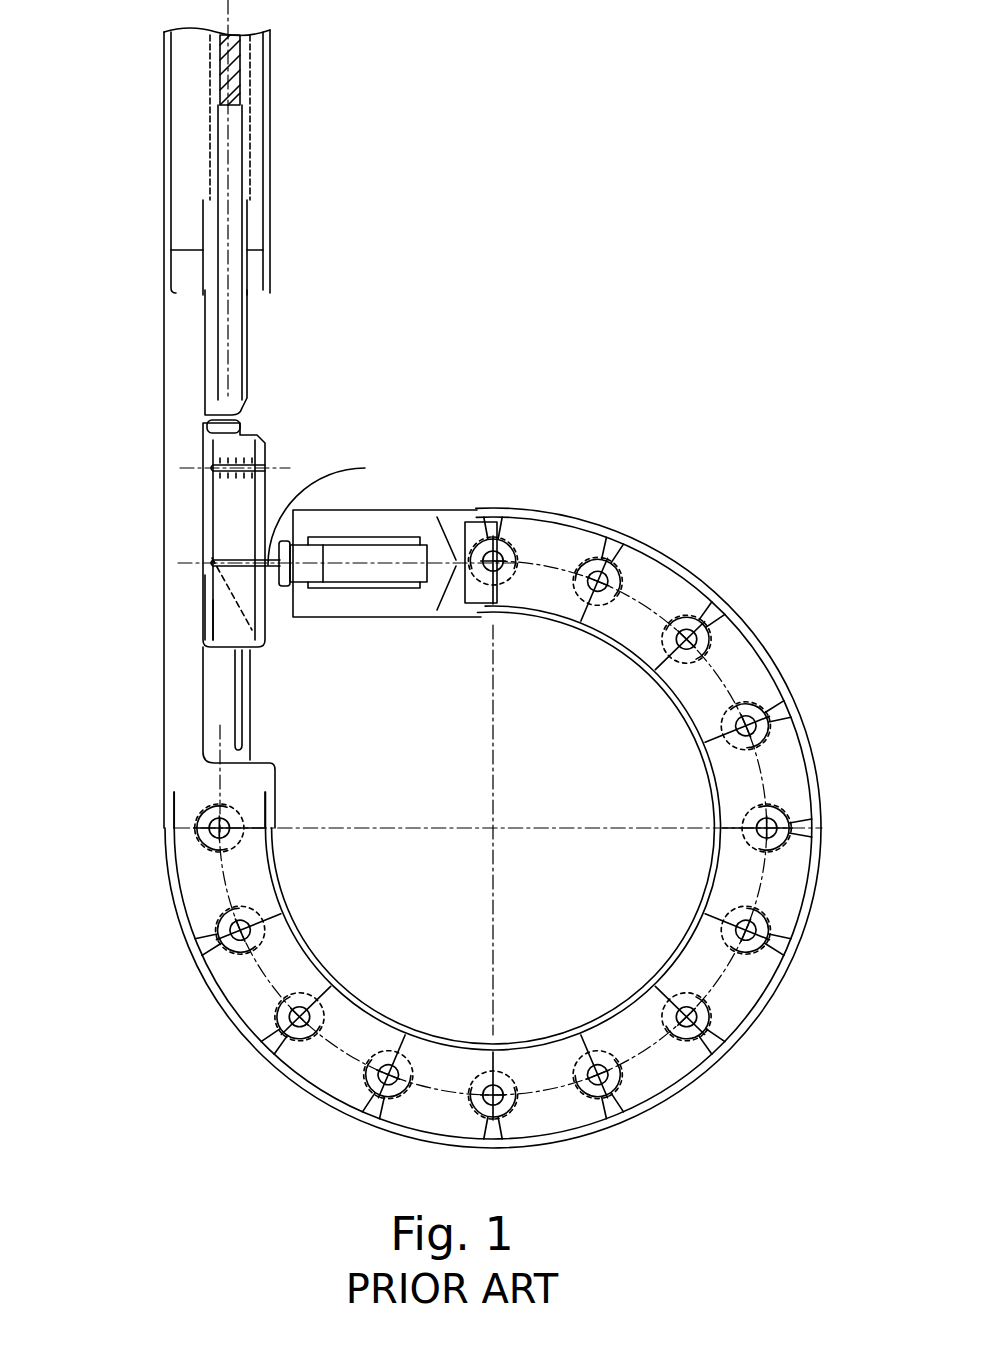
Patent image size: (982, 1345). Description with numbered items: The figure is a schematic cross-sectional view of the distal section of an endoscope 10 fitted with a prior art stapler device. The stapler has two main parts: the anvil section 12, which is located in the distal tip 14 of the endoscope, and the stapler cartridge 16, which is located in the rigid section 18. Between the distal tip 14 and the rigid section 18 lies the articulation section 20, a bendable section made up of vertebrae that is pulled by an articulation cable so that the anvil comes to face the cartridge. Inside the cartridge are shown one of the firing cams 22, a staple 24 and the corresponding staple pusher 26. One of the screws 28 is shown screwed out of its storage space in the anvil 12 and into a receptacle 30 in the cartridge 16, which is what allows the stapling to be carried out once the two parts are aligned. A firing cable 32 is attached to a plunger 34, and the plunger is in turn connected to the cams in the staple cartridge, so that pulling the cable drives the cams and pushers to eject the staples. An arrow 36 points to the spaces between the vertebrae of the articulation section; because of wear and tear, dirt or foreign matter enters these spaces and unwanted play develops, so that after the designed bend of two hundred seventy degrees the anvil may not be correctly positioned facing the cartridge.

The endoscope 10 is at (445, 579).
The anvil section 12 is at (302, 575).
The distal tip 14 is at (410, 510).
The stapler cartridge 16 is at (277, 433).
The rigid section 18 is at (180, 738).
The articulation section 20 is at (302, 1073).
The firing cam 22 is at (218, 614).
The staple 24 is at (230, 560).
The staple pusher 26 is at (218, 563).
The screw 28 is at (332, 461).
The receptacle 30 is at (213, 592).
The firing cable 32 is at (240, 73).
The plunger 34 is at (243, 358).
The arrow indicating spaces between vertebrae 36 is at (643, 683).